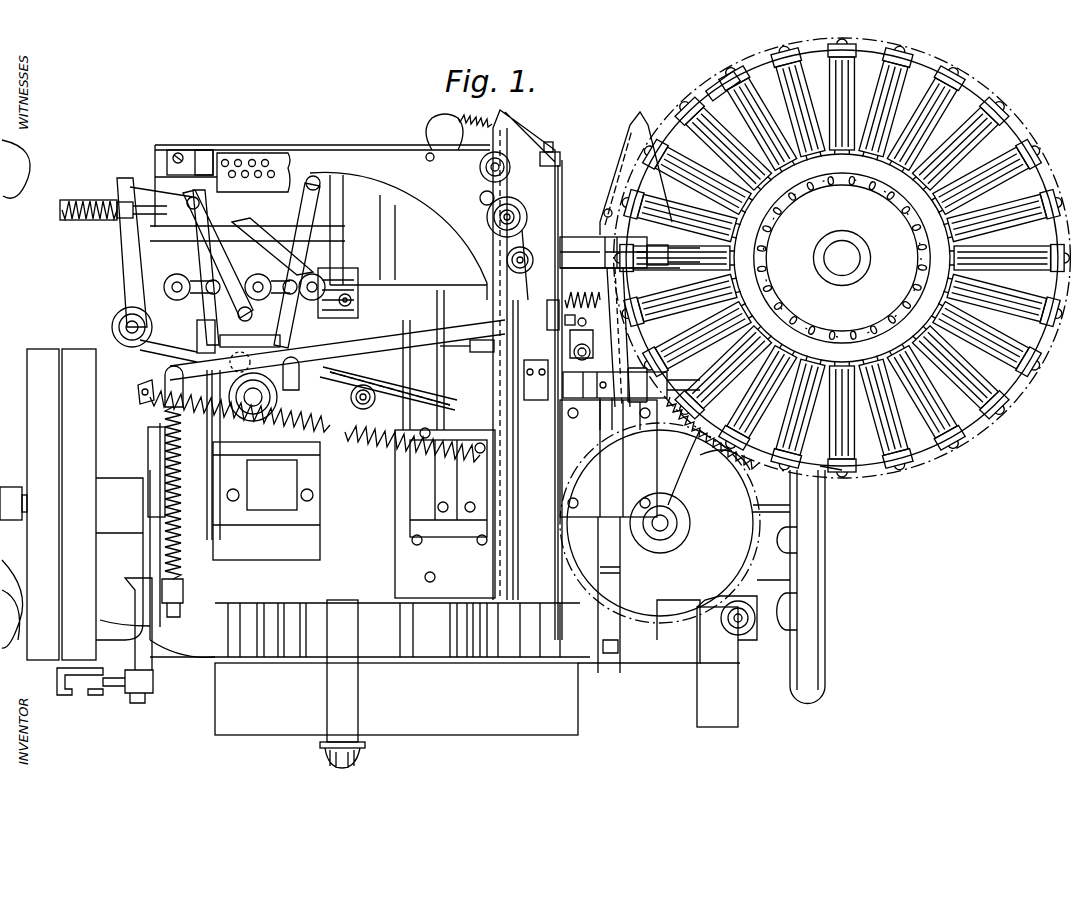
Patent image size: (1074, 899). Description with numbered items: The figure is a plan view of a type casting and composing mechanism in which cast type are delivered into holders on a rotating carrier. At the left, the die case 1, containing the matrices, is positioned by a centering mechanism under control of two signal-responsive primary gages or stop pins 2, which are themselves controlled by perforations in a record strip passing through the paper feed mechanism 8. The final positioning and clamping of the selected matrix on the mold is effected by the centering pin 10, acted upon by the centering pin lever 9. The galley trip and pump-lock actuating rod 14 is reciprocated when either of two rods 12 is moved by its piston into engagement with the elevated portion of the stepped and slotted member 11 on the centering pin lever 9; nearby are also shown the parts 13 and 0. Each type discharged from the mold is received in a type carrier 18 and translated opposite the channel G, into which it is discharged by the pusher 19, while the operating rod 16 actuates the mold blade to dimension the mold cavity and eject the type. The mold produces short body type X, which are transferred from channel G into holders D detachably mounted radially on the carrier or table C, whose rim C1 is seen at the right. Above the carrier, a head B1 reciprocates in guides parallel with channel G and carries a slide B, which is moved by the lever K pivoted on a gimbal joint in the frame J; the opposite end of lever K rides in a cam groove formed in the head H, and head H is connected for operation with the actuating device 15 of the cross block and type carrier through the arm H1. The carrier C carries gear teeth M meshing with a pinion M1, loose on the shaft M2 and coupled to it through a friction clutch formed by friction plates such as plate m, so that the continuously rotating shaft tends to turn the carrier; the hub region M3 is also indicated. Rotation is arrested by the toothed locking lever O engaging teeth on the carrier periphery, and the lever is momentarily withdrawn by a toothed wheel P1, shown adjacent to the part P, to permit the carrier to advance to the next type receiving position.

The die case 1 is at (356, 375).
The primary gages or stop pins 2 is at (470, 367).
The paper feed mechanism 8 is at (272, 483).
The centering pin lever 9 is at (493, 347).
The centering pin 10 is at (513, 213).
The stepped and slotted member 11 is at (365, 285).
The rods 12 is at (372, 285).
The crossed levers 13 is at (377, 273).
The galley trip and pump-lock actuating rod 14 is at (558, 305).
The actuating device 15 is at (497, 470).
The operating rod 16 is at (157, 208).
The type carrier 18 is at (510, 397).
The pusher 19 is at (350, 287).
The pivot 0 is at (565, 292).
The slide B is at (597, 337).
The head B1 is at (670, 242).
The carrier or table C is at (768, 86).
The rim C1 is at (817, 467).
The holders D is at (668, 145).
The channel G is at (620, 244).
The head H is at (608, 458).
The arm H1 is at (610, 655).
The frame J is at (614, 559).
The lever K is at (617, 360).
The gear teeth M is at (669, 510).
The pinion M1 is at (730, 477).
The shaft M2 is at (667, 528).
The boss M3 is at (681, 523).
The friction plate or disk m is at (672, 510).
The toothed locking lever O is at (630, 170).
The bracket P is at (623, 303).
The toothed wheel P1 is at (670, 394).
The short body type X is at (712, 250).